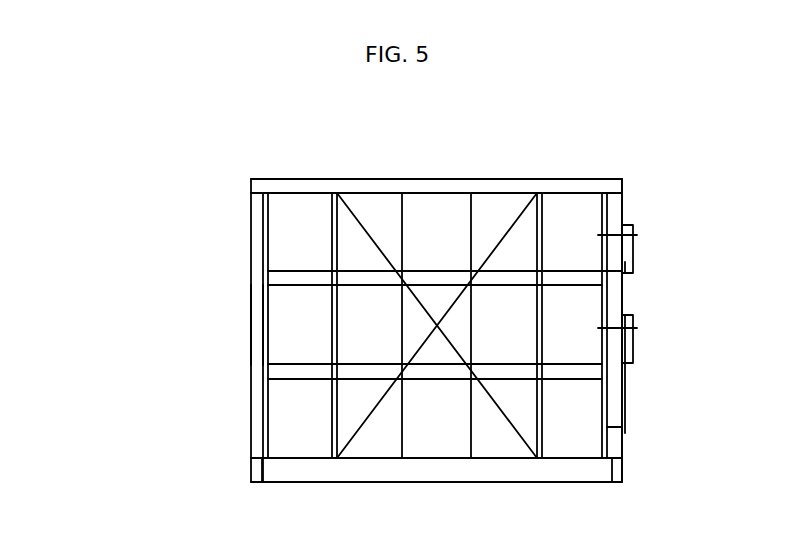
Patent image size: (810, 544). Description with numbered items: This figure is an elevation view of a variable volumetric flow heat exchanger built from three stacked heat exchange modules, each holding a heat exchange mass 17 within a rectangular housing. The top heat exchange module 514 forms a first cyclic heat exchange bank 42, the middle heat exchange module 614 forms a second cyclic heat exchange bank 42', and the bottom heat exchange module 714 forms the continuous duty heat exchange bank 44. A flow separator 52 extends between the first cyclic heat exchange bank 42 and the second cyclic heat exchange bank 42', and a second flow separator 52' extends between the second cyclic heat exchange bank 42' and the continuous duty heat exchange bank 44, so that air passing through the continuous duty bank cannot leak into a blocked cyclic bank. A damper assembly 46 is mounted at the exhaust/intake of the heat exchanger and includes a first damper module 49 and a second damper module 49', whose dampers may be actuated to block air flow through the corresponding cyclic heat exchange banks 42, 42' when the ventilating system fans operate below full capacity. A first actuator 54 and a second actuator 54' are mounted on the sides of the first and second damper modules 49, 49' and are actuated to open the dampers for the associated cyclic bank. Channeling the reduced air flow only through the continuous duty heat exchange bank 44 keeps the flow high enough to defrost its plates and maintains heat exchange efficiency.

The heat exchange mass 17 is at (290, 220).
The first cyclic heat exchange bank 42 is at (668, 246).
The second cyclic heat exchange bank 42' is at (672, 399).
The continuous duty heat exchange bank 44 is at (660, 427).
The damper assembly 46 is at (165, 252).
The first damper module 49 is at (382, 203).
The second damper module 49' is at (195, 325).
The flow separator 52 is at (397, 292).
The flow separator 52' is at (400, 384).
The first actuator 54 is at (661, 249).
The second actuator 54' is at (674, 352).
The top heat exchange module 514 is at (588, 207).
The middle heat exchange module 614 is at (581, 305).
The bottom heat exchange module 714 is at (595, 445).